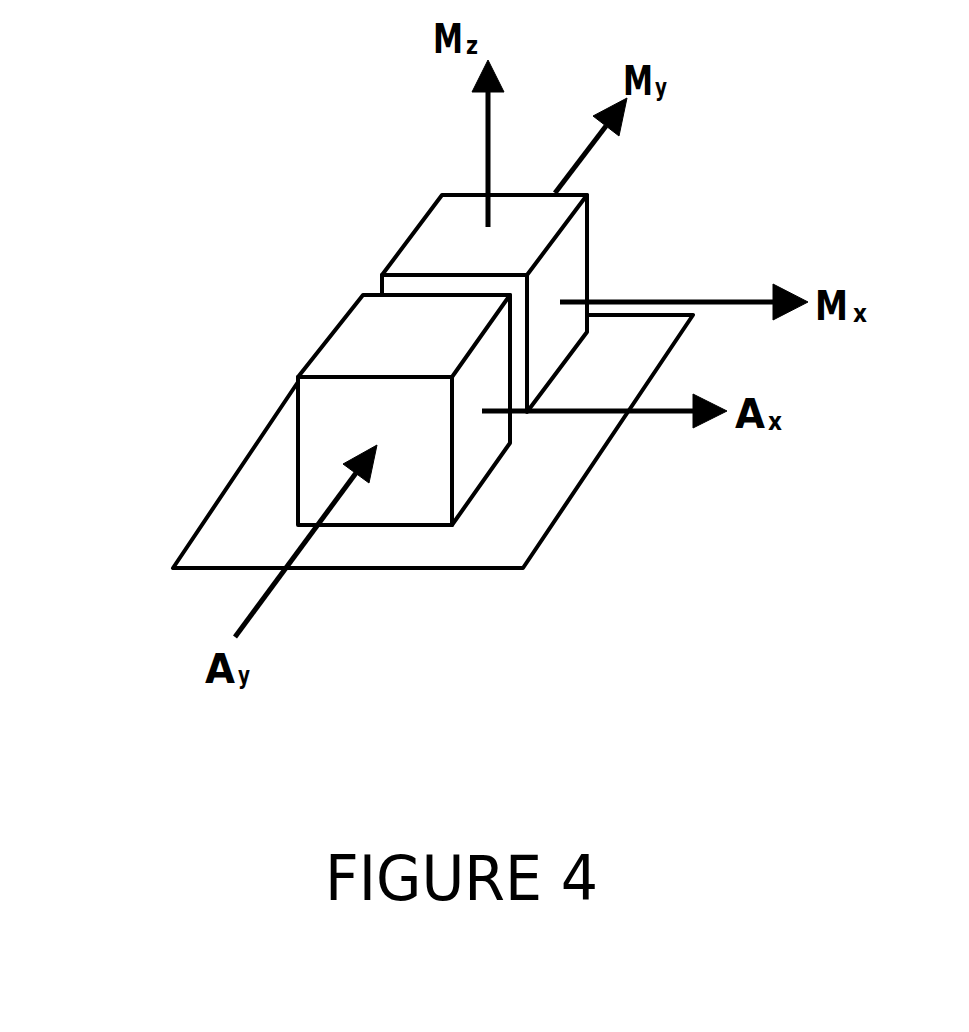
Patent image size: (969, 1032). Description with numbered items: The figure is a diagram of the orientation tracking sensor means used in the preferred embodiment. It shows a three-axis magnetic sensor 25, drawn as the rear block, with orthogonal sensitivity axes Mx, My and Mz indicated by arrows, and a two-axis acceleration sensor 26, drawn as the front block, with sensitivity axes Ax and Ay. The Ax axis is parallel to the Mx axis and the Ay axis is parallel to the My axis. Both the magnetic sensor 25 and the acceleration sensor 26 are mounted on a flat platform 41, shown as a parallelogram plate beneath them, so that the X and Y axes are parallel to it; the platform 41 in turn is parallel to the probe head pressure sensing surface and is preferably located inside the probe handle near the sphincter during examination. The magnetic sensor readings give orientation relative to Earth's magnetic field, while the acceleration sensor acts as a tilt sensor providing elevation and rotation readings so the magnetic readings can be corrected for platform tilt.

The three-axis magnetic sensor 25 is at (457, 237).
The two-axis acceleration sensor 26 is at (363, 340).
The platform 41 is at (243, 532).